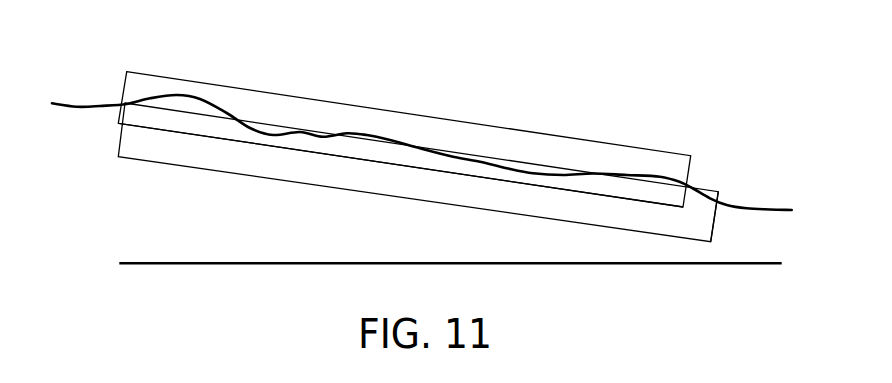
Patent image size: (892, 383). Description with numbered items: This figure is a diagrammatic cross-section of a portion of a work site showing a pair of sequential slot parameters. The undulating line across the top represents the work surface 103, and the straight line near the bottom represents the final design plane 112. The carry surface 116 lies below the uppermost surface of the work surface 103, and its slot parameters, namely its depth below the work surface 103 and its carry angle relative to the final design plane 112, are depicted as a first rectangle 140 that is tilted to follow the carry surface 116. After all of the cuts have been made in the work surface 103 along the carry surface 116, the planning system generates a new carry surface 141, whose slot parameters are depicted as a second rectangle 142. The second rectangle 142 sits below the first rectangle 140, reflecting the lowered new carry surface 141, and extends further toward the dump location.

The work surface 103 is at (97, 107).
The final design plane 112 is at (152, 263).
The carry surface 116 is at (370, 160).
The first rectangle 140 is at (313, 98).
The new carry surface 141 is at (482, 207).
The second rectangle 142 is at (718, 192).